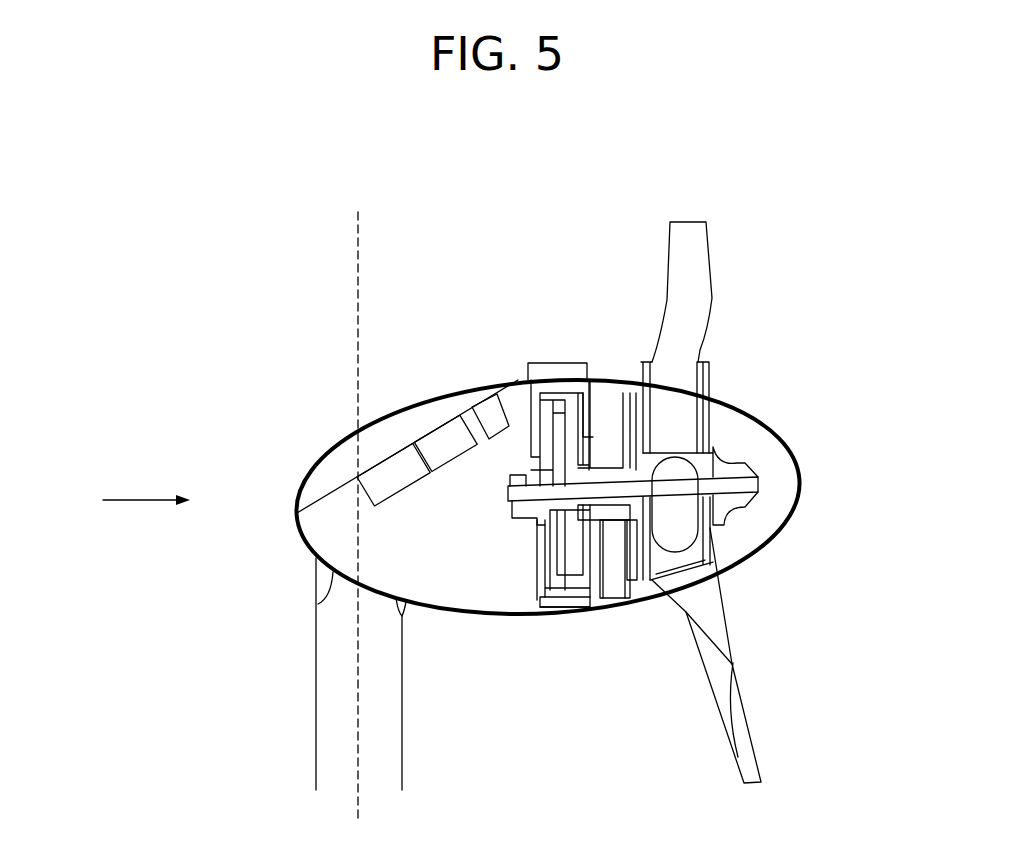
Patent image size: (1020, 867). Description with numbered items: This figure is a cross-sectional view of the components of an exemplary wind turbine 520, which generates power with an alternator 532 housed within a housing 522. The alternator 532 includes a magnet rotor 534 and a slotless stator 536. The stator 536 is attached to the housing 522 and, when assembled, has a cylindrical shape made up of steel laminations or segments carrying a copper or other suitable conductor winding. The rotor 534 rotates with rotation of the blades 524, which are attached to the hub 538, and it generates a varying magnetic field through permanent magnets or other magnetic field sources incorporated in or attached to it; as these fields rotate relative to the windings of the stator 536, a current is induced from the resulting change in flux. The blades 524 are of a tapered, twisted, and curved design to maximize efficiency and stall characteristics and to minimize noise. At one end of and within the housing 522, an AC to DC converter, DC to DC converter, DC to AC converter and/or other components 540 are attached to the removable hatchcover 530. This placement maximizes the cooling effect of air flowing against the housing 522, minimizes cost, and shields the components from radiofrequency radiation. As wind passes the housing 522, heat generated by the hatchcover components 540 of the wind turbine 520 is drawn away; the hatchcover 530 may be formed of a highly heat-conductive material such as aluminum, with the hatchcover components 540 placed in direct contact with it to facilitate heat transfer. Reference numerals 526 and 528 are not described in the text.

The wind turbine 520 is at (200, 312).
The housing 522 is at (535, 613).
The blades 524 is at (712, 282).
The nacelle housing 526 is at (800, 482).
The tower 528 is at (345, 625).
The removable hatchcover 530 is at (422, 392).
The alternator 532 is at (558, 363).
The magnet rotor 534 is at (545, 398).
The slotless stator 536 is at (572, 383).
The hub 538 is at (712, 532).
The hatchcover components 540 is at (398, 452).